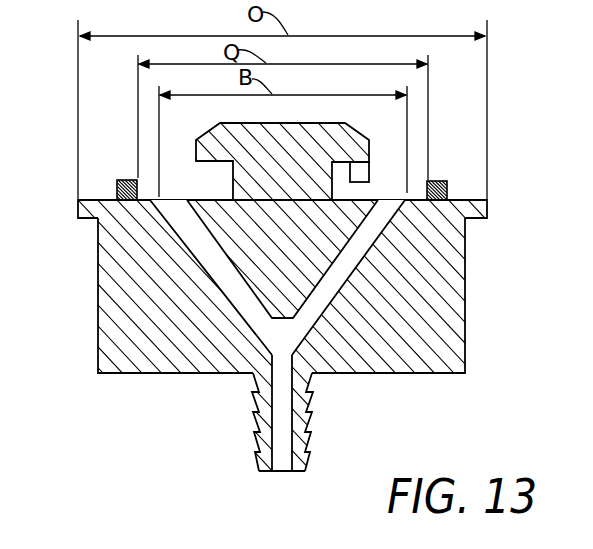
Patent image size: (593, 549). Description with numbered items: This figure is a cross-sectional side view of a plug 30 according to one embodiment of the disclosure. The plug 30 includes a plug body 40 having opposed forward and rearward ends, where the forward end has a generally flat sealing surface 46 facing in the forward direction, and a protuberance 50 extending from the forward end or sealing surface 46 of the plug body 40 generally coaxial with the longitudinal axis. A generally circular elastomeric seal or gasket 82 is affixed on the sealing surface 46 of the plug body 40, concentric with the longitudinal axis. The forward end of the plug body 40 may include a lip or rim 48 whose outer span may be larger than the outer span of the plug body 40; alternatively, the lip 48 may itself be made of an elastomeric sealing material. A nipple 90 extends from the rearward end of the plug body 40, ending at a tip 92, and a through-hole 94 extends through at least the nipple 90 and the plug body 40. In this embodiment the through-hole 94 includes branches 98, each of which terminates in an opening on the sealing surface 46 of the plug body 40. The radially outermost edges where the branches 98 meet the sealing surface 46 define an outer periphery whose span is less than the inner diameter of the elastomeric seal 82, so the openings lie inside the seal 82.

The plug 30 is at (70, 197).
The plug body 40 is at (98, 297).
The sealing surface 46 is at (100, 200).
The lip 48 is at (487, 208).
The protuberance 50 is at (300, 118).
The elastomeric seal 82 is at (448, 190).
The nipple 90 is at (310, 420).
The tip 92 is at (262, 472).
The through-hole 94 is at (294, 449).
The branches 98 is at (220, 270).